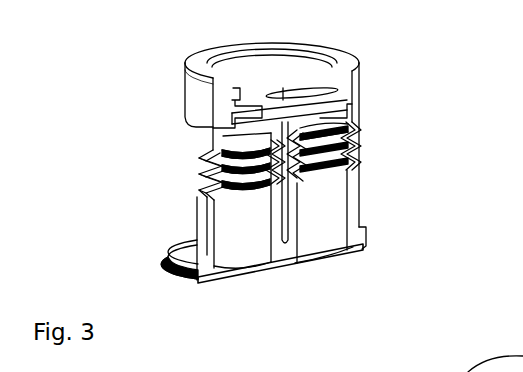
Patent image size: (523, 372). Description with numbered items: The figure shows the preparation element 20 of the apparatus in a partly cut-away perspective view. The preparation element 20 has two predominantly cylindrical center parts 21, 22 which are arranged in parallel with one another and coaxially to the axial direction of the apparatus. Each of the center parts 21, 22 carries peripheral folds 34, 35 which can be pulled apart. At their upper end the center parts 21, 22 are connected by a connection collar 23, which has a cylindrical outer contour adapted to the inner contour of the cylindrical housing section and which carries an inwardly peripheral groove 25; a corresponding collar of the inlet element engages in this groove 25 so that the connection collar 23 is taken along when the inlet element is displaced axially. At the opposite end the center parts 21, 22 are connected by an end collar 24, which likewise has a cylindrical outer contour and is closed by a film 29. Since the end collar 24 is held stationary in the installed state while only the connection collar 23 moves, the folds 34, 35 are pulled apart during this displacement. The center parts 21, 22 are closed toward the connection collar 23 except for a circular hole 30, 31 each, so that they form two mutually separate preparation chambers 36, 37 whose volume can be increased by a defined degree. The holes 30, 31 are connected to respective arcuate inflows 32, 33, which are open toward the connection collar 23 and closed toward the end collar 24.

The preparation element 20 is at (270, 150).
The center part 21 is at (389, 192).
The center part 22 is at (161, 206).
The connection collar 23 is at (358, 62).
The end collar 24 is at (364, 234).
The inwardly peripheral groove 25 is at (302, 77).
The film 29 is at (336, 251).
The circular hole 30 is at (322, 124).
The circular hole 31 is at (215, 148).
The arcuate inflow 32 is at (283, 97).
The arcuate inflow 33 is at (236, 100).
The peripheral folds 34 is at (350, 142).
The peripheral folds 35 is at (200, 175).
The preparation chamber 36 is at (318, 204).
The preparation chamber 37 is at (240, 228).